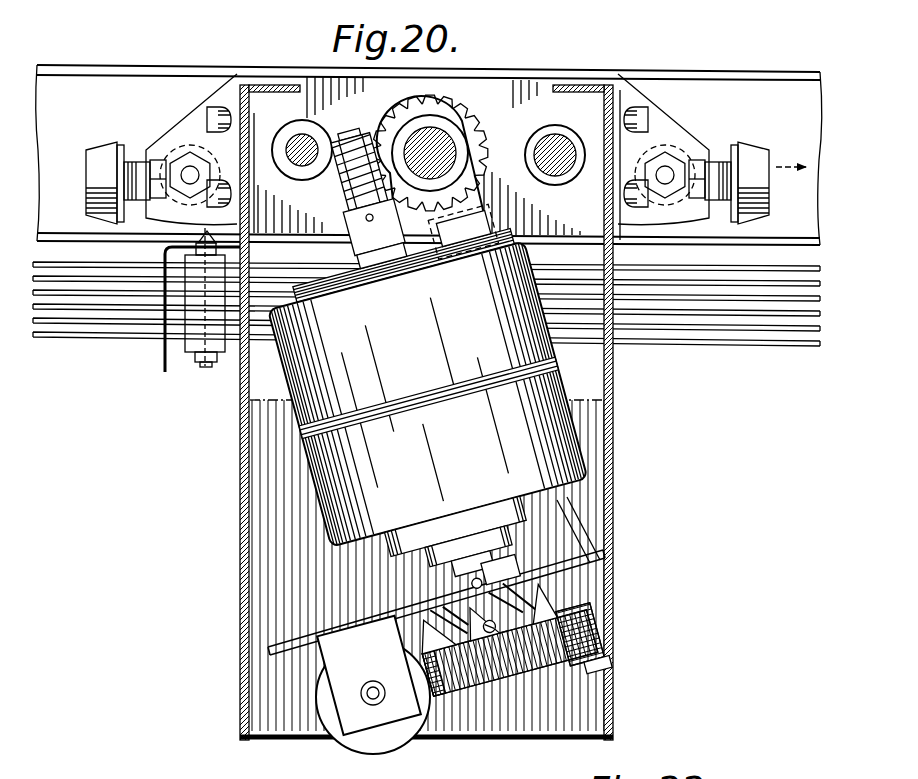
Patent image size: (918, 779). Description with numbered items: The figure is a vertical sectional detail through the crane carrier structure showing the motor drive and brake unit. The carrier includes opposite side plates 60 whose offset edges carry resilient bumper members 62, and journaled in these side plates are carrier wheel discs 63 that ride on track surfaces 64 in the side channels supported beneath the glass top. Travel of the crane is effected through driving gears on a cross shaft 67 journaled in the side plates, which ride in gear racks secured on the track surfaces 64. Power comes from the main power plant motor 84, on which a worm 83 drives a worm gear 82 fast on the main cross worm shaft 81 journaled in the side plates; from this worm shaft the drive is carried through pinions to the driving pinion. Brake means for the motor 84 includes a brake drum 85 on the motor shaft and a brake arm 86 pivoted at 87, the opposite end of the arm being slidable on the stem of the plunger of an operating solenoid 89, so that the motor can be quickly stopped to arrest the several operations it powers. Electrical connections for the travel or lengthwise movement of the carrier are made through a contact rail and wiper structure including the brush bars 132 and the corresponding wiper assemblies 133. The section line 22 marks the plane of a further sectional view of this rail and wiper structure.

The section line 22- 22 is at (196, 96).
The side plates 60 is at (406, 98).
The resilient bumper members 62 is at (96, 160).
The carrier wheel discs 63 is at (150, 147).
The track surfaces 64 is at (60, 231).
The cross shaft 67 is at (557, 180).
The main cross worm shaft 81 is at (460, 140).
The worm gear 82 is at (461, 110).
The worm 83 is at (340, 192).
The main power plant motor 84 is at (386, 337).
The brake drum 85 is at (531, 665).
The brake arm 86 is at (604, 642).
The pivot 87 is at (596, 667).
The operating solenoid 89 is at (387, 744).
The brush bars 132 is at (65, 292).
The wiper assemblies 133 is at (193, 320).